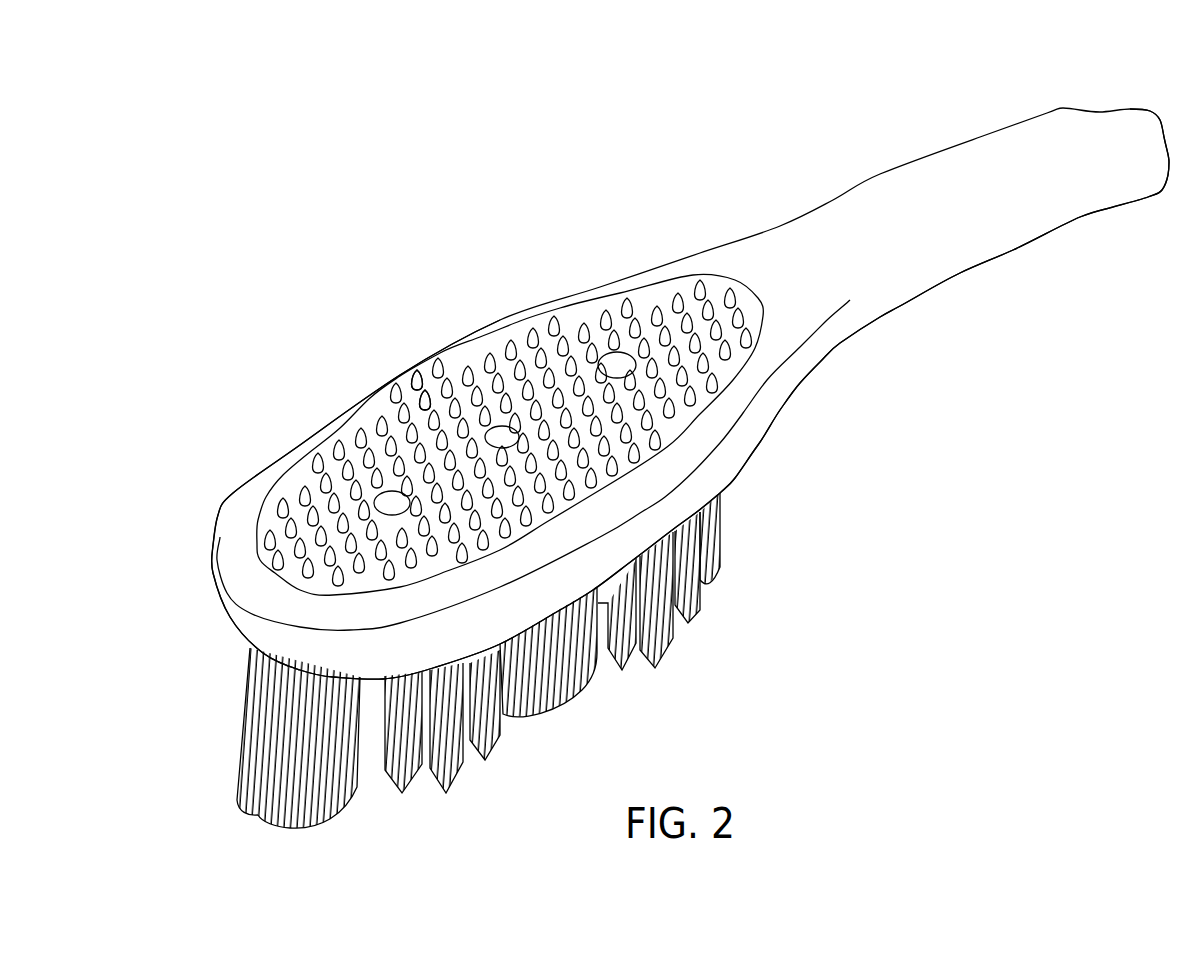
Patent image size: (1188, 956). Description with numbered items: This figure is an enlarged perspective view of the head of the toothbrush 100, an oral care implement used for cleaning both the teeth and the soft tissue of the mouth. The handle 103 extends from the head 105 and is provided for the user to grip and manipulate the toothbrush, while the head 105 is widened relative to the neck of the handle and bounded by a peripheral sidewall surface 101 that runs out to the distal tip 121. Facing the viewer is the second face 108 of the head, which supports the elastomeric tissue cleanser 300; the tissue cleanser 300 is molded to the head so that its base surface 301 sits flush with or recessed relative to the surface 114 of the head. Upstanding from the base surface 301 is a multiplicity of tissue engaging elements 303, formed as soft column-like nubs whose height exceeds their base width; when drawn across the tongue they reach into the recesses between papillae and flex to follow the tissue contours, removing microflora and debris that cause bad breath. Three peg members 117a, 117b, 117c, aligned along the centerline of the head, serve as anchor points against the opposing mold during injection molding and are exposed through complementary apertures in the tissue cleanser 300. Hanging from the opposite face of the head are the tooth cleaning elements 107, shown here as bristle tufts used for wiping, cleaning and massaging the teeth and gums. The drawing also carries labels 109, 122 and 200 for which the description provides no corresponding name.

The toothbrush 100 is at (871, 128).
The peripheral sidewall surface 101 is at (382, 653).
The handle 103 is at (1102, 110).
The head 105 is at (760, 466).
The tooth cleaning elements 107 is at (697, 542).
The second face 108 is at (250, 556).
The tooth cleaning elements 109 is at (470, 663).
The surface of the head 114 is at (363, 407).
The peg member 117a is at (388, 498).
The peg member 117b is at (503, 432).
The peg member 117c is at (615, 360).
The distal tip 121 is at (240, 633).
The bristle tuft 122 is at (228, 683).
The tooth cleaning element / bristle block 200 is at (583, 693).
The tissue cleanser 300 is at (677, 282).
The base surface 301 is at (272, 545).
The tissue engaging elements 303 is at (417, 383).